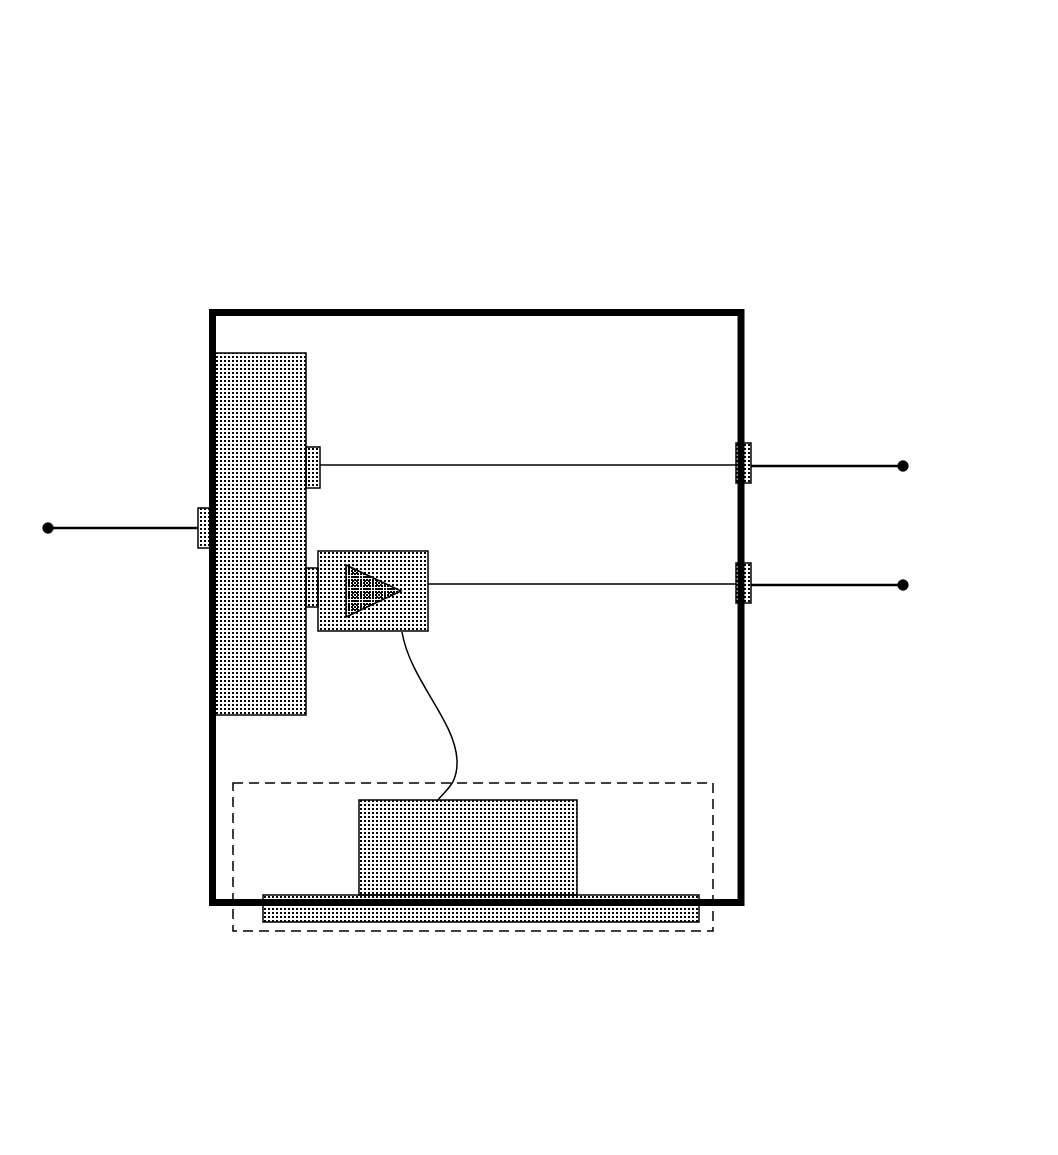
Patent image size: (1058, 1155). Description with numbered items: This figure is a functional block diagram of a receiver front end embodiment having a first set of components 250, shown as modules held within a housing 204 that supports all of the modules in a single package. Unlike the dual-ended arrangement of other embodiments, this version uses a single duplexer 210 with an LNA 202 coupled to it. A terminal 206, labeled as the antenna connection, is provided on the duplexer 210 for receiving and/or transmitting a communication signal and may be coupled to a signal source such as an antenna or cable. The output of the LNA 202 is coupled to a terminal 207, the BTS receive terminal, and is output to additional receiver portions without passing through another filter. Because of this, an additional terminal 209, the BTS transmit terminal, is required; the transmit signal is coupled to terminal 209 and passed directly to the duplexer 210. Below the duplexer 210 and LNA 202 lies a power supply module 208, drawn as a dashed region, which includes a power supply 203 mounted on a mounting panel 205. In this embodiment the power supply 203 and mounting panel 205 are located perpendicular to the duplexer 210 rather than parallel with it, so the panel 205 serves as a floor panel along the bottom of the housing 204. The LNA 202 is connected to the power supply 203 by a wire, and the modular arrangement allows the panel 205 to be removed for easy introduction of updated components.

The first set of components 250 is at (714, 59).
The housing 204 is at (745, 848).
The power supply module 208 is at (270, 932).
The duplexer 210 is at (224, 716).
The terminal 206 is at (107, 528).
The LNA 202 is at (350, 551).
The terminal 209 is at (845, 453).
The terminal 207 is at (845, 573).
The power supply 203 is at (577, 871).
The mounting panel 205 is at (632, 922).